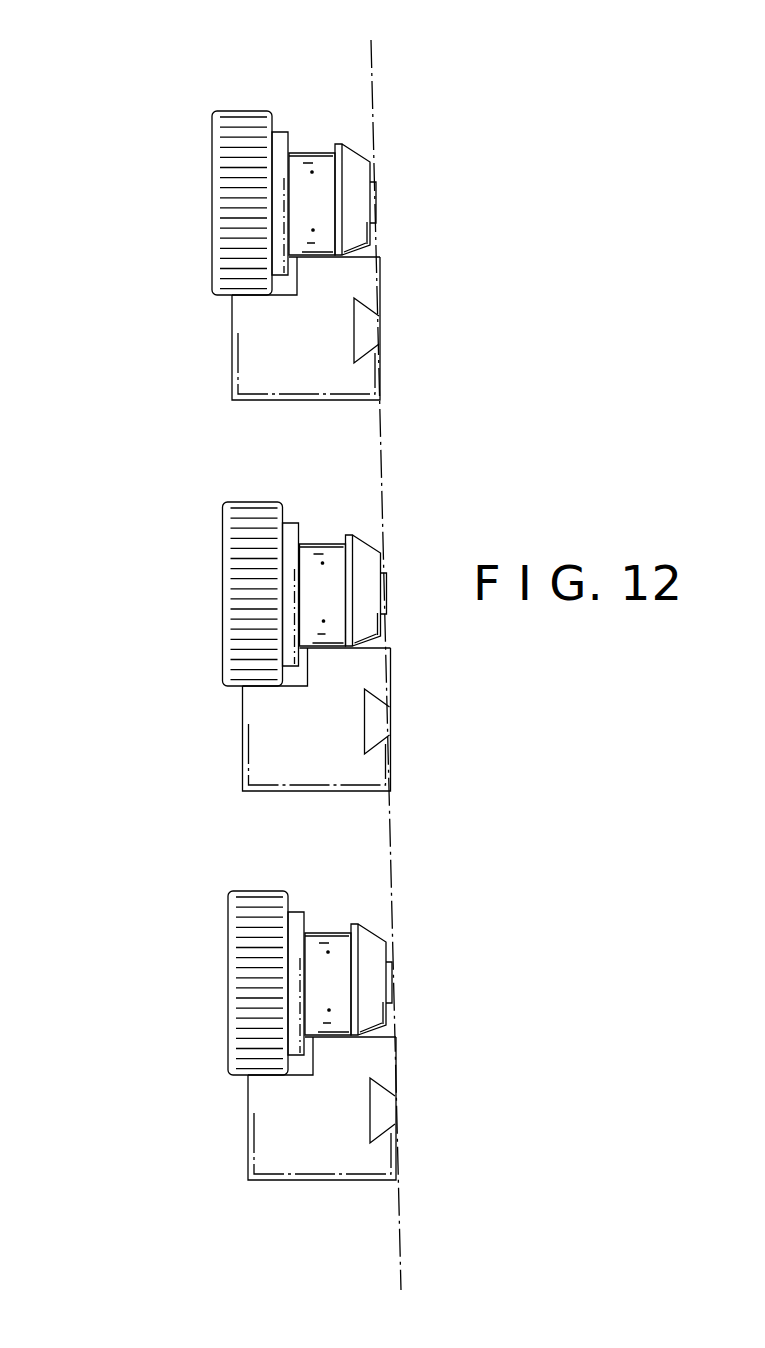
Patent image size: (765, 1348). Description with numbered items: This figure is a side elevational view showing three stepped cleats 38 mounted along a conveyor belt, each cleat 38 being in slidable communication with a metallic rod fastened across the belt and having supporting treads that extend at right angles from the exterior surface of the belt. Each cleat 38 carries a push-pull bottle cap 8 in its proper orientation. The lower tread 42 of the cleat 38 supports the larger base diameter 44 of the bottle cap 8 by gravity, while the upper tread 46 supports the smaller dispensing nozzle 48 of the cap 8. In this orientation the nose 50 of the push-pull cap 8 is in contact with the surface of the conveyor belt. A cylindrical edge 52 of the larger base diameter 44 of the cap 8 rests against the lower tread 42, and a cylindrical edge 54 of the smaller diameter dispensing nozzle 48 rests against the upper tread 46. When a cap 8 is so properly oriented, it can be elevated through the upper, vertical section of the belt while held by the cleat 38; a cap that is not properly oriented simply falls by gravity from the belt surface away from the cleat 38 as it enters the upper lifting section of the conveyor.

The lower tread 42 is at (233, 110).
The push-pull bottle cap 8 is at (323, 153).
The nose 50 is at (372, 181).
The upper tread 46 is at (342, 257).
The stepped cleat 38 is at (232, 358).
The dispensing nozzle 48 is at (333, 540).
The larger base diameter 44 is at (253, 890).
The cylindrical edge of dispensing nozzle 54 is at (347, 930).
The cylindrical edge of larger base diameter 52 is at (246, 1070).